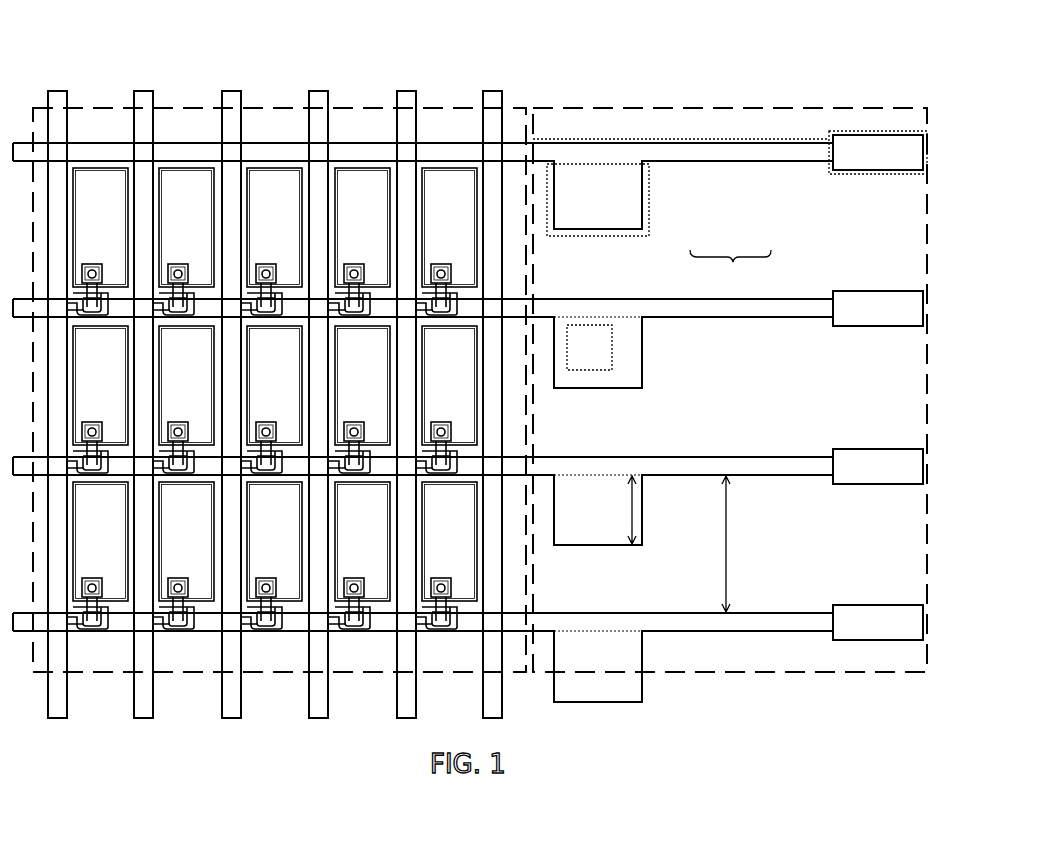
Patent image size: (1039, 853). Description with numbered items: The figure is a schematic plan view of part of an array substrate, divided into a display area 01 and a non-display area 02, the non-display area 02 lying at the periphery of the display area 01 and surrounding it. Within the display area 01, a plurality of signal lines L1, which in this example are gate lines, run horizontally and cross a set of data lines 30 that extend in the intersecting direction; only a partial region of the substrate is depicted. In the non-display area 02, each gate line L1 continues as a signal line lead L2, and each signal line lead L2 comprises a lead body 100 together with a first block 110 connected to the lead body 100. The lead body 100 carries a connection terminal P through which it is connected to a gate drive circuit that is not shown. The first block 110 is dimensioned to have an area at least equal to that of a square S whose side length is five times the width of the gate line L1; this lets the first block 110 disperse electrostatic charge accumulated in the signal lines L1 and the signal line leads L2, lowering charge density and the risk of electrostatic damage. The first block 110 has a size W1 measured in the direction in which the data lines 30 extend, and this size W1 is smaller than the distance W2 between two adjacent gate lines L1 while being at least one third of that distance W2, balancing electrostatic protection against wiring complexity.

The data line 30 is at (148, 92).
The display area 01 is at (370, 108).
The non-display area 02 is at (637, 108).
The signal line L1 is at (443, 143).
The lead body 100 is at (770, 162).
The first block 110 is at (649, 195).
The signal line lead L2 is at (730, 269).
The connection terminal P is at (878, 152).
The square S is at (589, 347).
The size of the first block W1 is at (617, 510).
The distance between two adjacent gate lines W2 is at (710, 544).